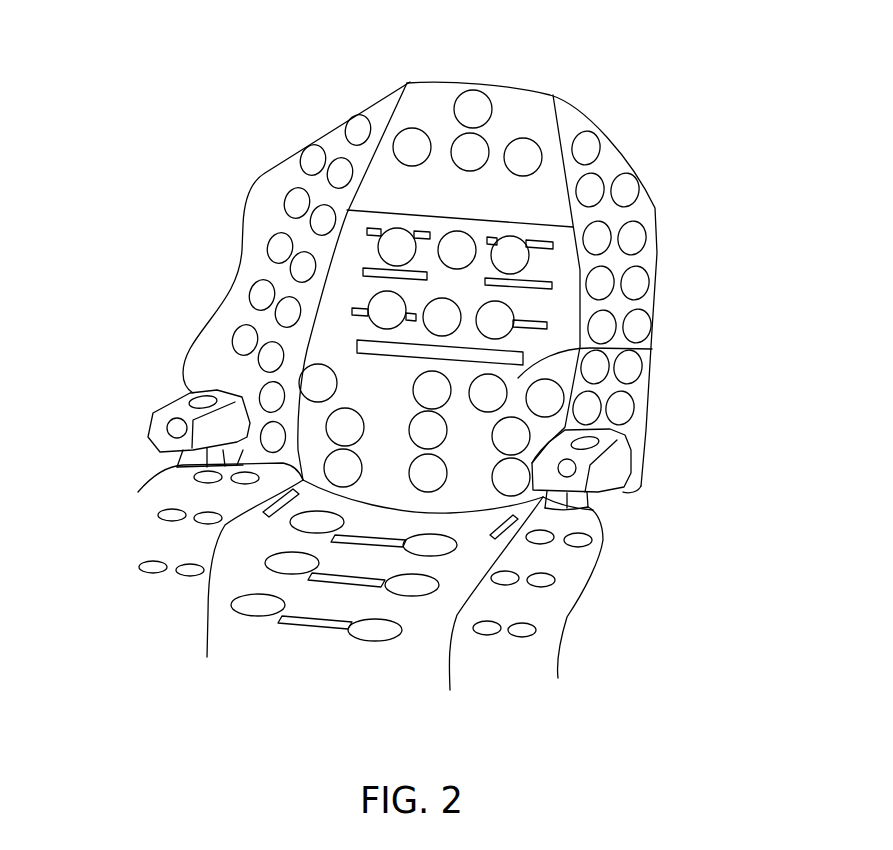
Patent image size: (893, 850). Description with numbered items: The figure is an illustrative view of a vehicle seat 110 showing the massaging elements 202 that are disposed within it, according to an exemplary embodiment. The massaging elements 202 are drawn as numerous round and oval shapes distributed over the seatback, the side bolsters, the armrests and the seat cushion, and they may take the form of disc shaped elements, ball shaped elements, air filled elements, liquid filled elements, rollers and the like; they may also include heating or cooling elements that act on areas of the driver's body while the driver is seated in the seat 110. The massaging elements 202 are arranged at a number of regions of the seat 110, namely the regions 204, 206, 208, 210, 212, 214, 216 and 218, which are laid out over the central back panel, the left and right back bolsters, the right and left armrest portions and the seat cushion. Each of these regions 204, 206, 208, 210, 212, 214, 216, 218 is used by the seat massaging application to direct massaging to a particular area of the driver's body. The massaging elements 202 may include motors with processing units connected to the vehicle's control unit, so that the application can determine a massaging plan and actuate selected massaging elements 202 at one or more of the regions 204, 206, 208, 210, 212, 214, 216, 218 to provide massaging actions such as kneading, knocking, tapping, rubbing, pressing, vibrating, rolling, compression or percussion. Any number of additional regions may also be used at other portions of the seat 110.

The seat 110 is at (510, 45).
The massaging elements 202 is at (523, 157).
The region 204 is at (432, 107).
The region 206 is at (268, 190).
The region 208 is at (657, 198).
The region 210 is at (652, 349).
The region 212 is at (603, 540).
The region 214 is at (157, 490).
The region 216 is at (447, 603).
The region 218 is at (357, 220).